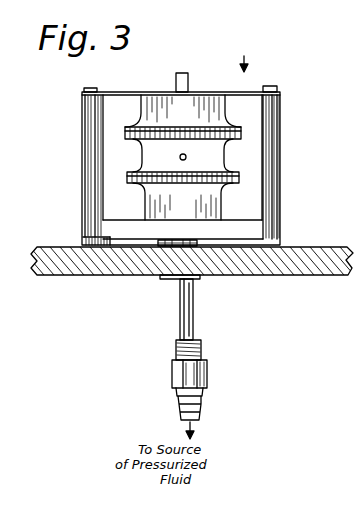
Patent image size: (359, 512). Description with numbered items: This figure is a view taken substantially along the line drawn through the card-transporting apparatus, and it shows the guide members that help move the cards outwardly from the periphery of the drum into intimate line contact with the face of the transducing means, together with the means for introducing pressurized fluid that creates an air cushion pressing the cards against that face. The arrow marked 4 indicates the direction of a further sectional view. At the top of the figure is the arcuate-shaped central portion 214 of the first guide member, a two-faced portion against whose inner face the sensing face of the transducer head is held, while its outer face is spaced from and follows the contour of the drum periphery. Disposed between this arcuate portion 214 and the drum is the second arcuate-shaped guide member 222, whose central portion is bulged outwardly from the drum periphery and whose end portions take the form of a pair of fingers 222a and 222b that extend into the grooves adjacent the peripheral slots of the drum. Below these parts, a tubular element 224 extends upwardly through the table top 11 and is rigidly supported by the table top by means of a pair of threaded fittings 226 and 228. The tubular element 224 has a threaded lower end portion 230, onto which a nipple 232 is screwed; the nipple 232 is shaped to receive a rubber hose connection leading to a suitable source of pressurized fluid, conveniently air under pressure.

The section line 4— 4 is at (242, 57).
The table top 11 is at (84, 262).
The arcuate-shaped central portion 214 is at (248, 150).
The second arcuate-shaped guide member 222 is at (203, 150).
The finger 222a is at (124, 132).
The finger 222b is at (127, 178).
The tubular element 224 is at (193, 296).
The threaded fitting 226 is at (170, 278).
The threaded fitting 228 is at (168, 247).
The threaded lower end portion 230 is at (176, 351).
The nipple 232 is at (186, 378).